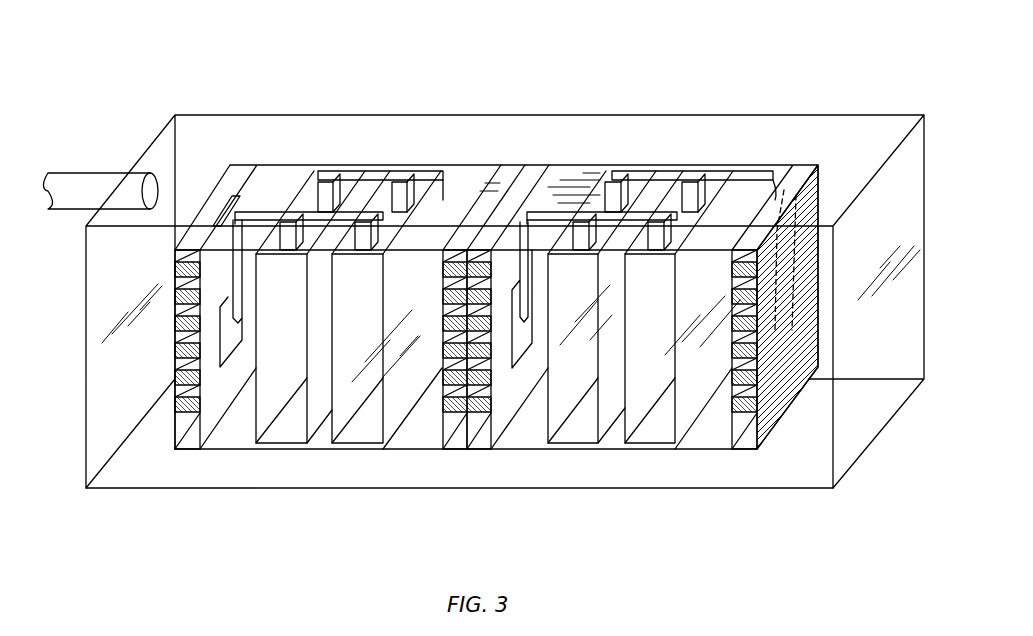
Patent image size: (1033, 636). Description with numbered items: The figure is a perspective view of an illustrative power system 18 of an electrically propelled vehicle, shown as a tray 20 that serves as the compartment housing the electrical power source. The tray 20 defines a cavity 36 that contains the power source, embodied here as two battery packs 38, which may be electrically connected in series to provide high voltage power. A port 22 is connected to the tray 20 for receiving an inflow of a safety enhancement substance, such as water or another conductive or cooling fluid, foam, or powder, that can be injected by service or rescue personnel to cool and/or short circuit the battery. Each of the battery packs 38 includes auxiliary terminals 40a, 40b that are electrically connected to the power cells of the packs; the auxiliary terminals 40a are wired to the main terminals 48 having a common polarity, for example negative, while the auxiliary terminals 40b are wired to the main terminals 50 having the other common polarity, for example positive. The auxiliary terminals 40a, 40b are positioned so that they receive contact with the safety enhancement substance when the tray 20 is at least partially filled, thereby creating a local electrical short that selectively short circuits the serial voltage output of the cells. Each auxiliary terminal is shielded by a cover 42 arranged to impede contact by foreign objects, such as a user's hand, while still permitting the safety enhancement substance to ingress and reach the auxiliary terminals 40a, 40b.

The power system 18 is at (110, 72).
The tray 20 is at (878, 114).
The port 22 is at (81, 162).
The cavity 36 is at (138, 470).
The battery packs 38 is at (572, 153).
The auxiliary terminals 40a is at (225, 304).
The auxiliary terminals 40b is at (790, 272).
The cover 42 is at (189, 459).
The main terminals 48 is at (366, 248).
The main terminals 50 is at (412, 182).